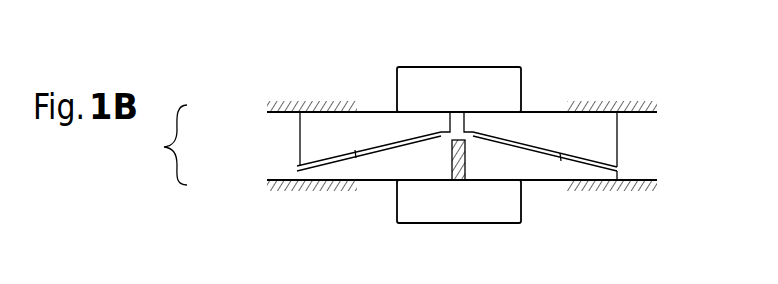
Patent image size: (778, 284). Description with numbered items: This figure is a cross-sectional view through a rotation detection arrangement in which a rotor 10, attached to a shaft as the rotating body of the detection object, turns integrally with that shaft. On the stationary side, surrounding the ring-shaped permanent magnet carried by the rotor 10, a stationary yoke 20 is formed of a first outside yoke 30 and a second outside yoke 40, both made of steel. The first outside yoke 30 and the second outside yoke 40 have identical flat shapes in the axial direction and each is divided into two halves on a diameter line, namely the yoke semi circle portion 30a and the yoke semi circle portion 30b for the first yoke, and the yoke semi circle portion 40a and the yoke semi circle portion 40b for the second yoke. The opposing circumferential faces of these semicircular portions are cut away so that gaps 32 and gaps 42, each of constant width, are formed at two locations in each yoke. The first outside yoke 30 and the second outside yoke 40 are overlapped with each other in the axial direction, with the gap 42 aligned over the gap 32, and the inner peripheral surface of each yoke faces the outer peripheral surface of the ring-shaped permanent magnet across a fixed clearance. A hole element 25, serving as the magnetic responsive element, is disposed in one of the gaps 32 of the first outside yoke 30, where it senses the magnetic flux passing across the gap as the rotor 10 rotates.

The rotor 10 is at (394, 79).
The valve assembly 20 is at (157, 145).
The hole element 25 is at (452, 160).
The first outside yoke 30 is at (298, 173).
The yoke semi circle portion 30a is at (359, 166).
The yoke semi circle portion 30b is at (554, 166).
The gap 32 is at (457, 182).
The second outside yoke 40 is at (298, 127).
The yoke semi circle portion 40a is at (357, 117).
The yoke semi circle portion 40b is at (553, 118).
The gap 42 is at (458, 127).